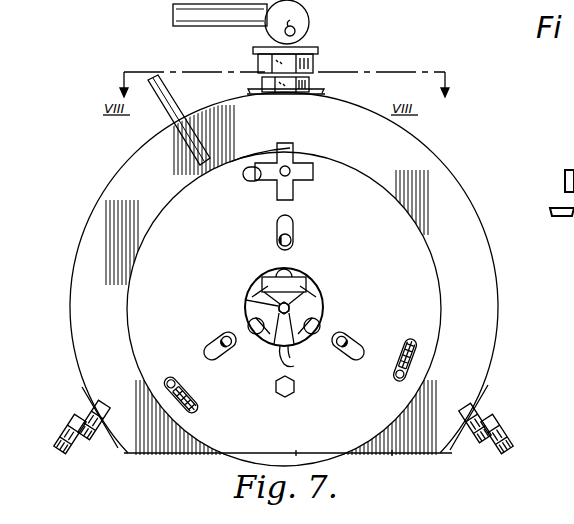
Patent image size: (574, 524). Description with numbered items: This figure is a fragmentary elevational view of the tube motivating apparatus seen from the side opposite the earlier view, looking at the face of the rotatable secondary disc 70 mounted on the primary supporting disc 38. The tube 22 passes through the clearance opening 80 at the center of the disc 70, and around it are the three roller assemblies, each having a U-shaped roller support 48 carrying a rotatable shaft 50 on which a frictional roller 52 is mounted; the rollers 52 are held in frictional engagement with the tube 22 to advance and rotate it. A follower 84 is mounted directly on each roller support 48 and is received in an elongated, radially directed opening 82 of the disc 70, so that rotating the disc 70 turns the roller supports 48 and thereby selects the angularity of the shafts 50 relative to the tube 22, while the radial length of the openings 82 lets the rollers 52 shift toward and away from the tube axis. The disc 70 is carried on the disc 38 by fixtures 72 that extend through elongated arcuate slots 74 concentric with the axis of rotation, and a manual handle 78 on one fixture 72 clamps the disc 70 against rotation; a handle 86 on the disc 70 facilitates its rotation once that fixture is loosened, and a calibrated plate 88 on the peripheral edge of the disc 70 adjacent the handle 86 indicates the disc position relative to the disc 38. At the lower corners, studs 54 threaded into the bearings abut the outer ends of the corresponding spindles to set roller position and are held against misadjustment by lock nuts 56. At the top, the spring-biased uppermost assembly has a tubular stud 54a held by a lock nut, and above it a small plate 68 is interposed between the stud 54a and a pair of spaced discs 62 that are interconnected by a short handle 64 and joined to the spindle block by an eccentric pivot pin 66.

The tube 22 is at (252, 294).
The primary supporting disc 38 is at (448, 182).
The U-shaped roller support 48 is at (262, 277).
The rotatable shaft 50 is at (290, 274).
The frictional roller 52 is at (296, 363).
The stud 54 is at (64, 446).
The tubular stud 54a is at (318, 63).
The lock nut 56 is at (312, 88).
The spaced discs 62 is at (310, 20).
The short handle 64 is at (236, 12).
The pivot pin 66 is at (283, 20).
The small plate 68 is at (305, 50).
The rotatable secondary disc 70 is at (420, 240).
The fixture 72 is at (292, 392).
The elongated arcuate slot 74 is at (256, 181).
The manual handle 78 is at (307, 176).
The clearance opening 80 is at (318, 300).
The opening 82 is at (294, 226).
The follower 84 is at (292, 243).
The handle 86 is at (172, 112).
The calibrated plate 88 is at (258, 150).